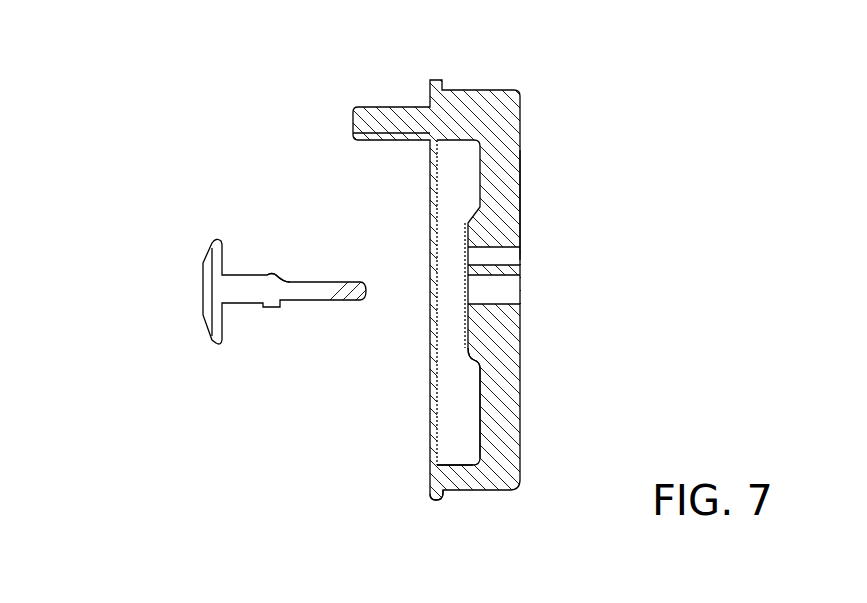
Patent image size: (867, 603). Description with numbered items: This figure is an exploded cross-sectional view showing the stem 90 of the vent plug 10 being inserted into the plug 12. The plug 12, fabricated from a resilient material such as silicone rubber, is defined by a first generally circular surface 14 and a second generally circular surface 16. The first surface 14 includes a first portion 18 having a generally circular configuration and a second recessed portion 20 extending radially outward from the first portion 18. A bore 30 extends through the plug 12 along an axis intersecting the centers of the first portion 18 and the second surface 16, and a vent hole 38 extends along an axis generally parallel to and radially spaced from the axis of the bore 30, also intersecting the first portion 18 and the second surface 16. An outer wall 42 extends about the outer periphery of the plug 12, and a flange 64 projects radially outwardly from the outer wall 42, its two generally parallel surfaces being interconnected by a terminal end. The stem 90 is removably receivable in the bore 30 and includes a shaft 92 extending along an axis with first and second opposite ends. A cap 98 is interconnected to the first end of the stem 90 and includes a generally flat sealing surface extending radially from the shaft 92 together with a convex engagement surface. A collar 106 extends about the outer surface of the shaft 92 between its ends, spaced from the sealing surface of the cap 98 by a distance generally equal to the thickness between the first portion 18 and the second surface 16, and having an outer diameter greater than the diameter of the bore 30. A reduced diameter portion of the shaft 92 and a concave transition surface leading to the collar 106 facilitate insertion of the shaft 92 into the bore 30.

The vent plug 10 is at (157, 378).
The plug 12 is at (525, 88).
The first surface 14 is at (467, 242).
The second surface 16 is at (520, 178).
The first portion 18 is at (462, 343).
The second recessed portion 20 is at (480, 378).
The bore 30 is at (512, 290).
The vent hole 38 is at (512, 254).
The outer wall 42 is at (450, 428).
The flange 64 is at (432, 502).
The stem 90 is at (353, 107).
The shaft 92 is at (308, 278).
The cap 98 is at (208, 325).
The collar 106 is at (268, 272).